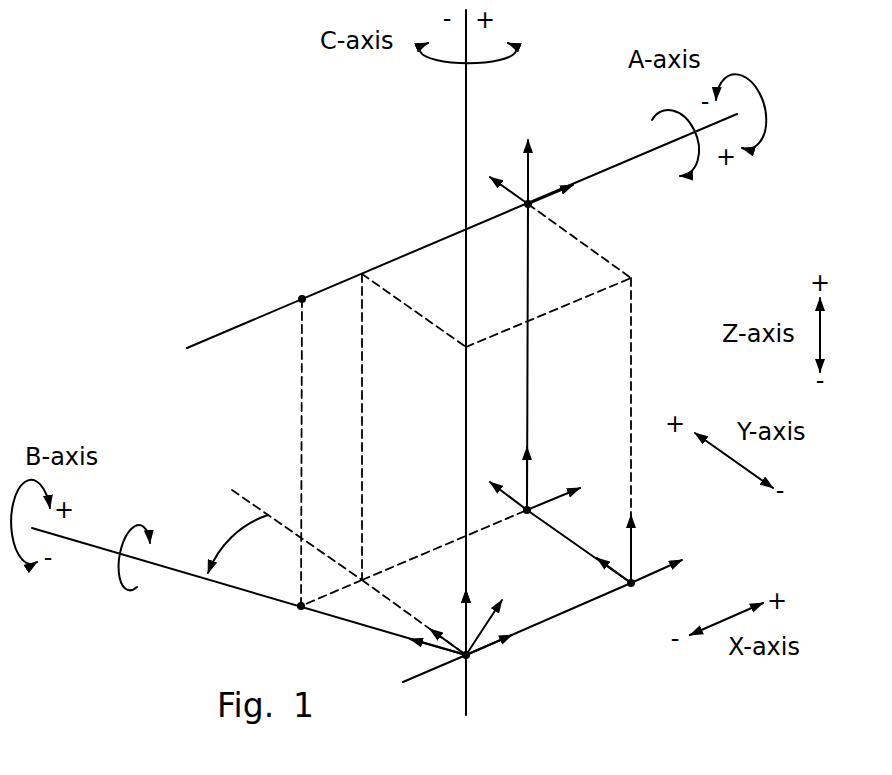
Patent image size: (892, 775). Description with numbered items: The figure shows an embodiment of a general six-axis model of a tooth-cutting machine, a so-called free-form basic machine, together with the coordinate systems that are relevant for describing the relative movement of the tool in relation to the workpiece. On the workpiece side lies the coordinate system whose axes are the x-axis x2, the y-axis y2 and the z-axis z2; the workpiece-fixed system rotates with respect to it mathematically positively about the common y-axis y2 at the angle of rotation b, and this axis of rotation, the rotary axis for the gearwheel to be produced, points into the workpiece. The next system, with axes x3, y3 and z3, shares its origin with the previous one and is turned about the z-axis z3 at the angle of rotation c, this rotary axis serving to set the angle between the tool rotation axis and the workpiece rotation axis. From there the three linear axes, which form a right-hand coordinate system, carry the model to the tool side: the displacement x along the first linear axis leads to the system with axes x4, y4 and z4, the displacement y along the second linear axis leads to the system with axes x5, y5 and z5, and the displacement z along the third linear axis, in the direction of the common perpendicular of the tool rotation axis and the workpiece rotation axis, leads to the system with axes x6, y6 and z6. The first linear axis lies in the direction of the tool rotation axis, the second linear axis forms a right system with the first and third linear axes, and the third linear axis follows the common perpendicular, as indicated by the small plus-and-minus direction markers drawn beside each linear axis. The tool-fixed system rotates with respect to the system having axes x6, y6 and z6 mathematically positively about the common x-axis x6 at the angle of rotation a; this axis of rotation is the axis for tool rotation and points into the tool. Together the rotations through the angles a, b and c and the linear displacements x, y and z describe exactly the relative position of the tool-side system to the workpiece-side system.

The x-axis x is at (548, 619).
The y-axis y is at (579, 546).
The z-axis z is at (538, 357).
The angle of rotation a is at (675, 155).
The angle of rotation b is at (134, 574).
The angle of rotation c is at (238, 544).
The x-axis of coordinate system Σ2 x2 is at (501, 617).
The y-axis of coordinate system Σ2 y2 is at (423, 649).
The z-axis of coordinate system Σ2 z2 is at (482, 597).
The x-axis of coordinate system Σ3 x3 is at (507, 647).
The y-axis of coordinate system Σ3 y3 is at (443, 621).
The z-axis of coordinate system Σ3 z3 is at (482, 608).
The x-axis of coordinate system Σ4 x4 is at (659, 581).
The y-axis of coordinate system Σ4 y4 is at (600, 571).
The z-axis of coordinate system Σ4 z4 is at (648, 547).
The x-axis of coordinate system Σ5 x5 is at (563, 502).
The y-axis of coordinate system Σ5 y5 is at (502, 477).
The z-axis of coordinate system Σ5 z5 is at (545, 470).
The x-axis of coordinate system Σ6 x6 is at (557, 175).
The y-axis of coordinate system Σ6 y6 is at (503, 172).
The z-axis of coordinate system Σ6 z6 is at (536, 156).